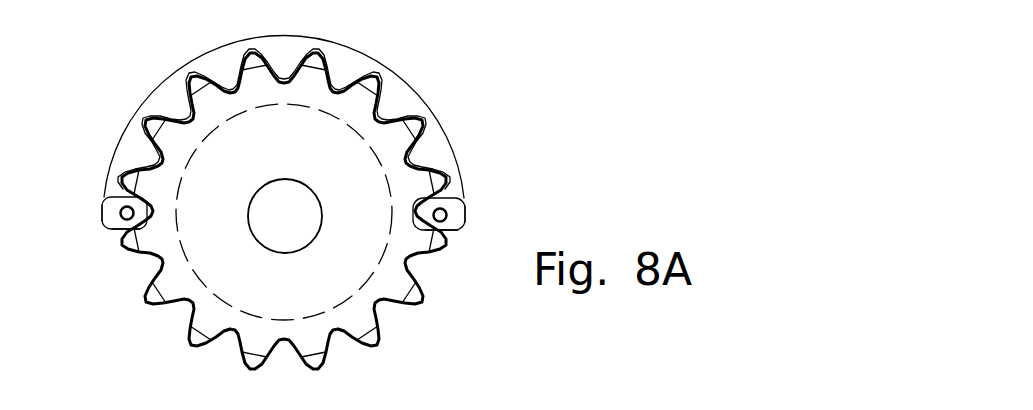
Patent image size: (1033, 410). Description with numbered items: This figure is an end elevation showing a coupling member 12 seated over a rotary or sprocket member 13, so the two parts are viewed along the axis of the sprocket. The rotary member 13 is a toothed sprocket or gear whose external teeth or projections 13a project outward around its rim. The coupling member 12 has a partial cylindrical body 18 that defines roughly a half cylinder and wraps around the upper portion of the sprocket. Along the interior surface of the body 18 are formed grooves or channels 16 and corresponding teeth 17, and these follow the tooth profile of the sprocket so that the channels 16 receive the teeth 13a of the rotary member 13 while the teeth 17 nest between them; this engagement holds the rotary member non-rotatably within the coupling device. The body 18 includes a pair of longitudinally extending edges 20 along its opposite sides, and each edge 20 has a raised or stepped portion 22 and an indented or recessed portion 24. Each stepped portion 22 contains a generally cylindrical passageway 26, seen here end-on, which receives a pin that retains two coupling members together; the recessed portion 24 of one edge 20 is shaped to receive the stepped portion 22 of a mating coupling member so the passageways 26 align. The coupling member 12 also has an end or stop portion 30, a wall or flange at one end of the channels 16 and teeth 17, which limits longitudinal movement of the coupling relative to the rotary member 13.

The coupling member 12 is at (426, 90).
The rotary or sprocket member 13 is at (208, 356).
The teeth or projections 13a is at (370, 346).
The grooves or channels 16 is at (318, 46).
The teeth 17 is at (340, 82).
The partial cylindrical body 18 is at (203, 50).
The longitudinally extending edge 20 is at (102, 232).
The raised or stepped portion 22 is at (123, 236).
The indented or recessed portion 24 is at (102, 207).
The cylindrical passageway 26 is at (124, 222).
The end or stop portion 30 is at (165, 213).